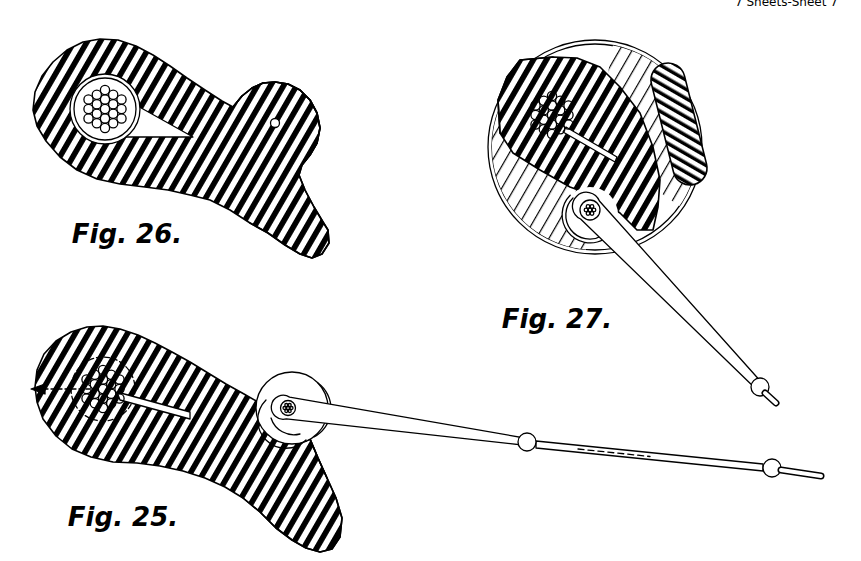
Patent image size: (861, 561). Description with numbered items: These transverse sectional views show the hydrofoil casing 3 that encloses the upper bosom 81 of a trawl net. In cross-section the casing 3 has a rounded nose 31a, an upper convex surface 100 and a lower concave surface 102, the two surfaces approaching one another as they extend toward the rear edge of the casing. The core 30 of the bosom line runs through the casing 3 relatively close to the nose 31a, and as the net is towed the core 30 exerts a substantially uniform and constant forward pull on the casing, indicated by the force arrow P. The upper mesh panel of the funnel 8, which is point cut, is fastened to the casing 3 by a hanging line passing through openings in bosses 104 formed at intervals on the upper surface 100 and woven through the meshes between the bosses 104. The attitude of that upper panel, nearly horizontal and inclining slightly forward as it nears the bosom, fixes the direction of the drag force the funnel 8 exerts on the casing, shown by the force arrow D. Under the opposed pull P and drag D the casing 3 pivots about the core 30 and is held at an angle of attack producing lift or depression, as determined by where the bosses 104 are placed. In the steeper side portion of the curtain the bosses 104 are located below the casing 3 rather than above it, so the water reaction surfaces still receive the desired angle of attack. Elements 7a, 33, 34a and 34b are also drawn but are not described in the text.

In FIG. 26, the casing 3 is at (176, 72).
In FIG. 25, the casing 3 is at (200, 371).
In FIG. 27, the casing 3 is at (548, 68).
In FIG. 26, the rounded nose 31a is at (45, 69).
In FIG. 25, the rounded nose 31a is at (50, 356).
In FIG. 27, the rounded nose 31a is at (507, 76).
In FIG. 26, the core 30 is at (78, 134).
In FIG. 25, the core 30 is at (64, 432).
In FIG. 27, the core 30 is at (526, 115).
In FIG. 26, the upper bosom 81 is at (158, 46).
In FIG. 25, the upper bosom 81 is at (192, 344).
In FIG. 26, the upper convex surface 100 is at (213, 91).
In FIG. 25, the upper convex surface 100 is at (234, 382).
In FIG. 26, the lower concave surface 102 is at (241, 222).
In FIG. 25, the lower concave surface 102 is at (258, 508).
In FIG. 26, the bosses 104 is at (307, 100).
In FIG. 25, the bosses 104 is at (306, 380).
In FIG. 27, the bosses 104 is at (572, 222).
In FIG. 25, the funnel 8 is at (445, 424).
In FIG. 27, the rod 7a is at (694, 306).
In FIG. 27, the strap 33 is at (699, 118).
In FIG. 27, the upper pad 34a is at (633, 70).
In FIG. 27, the lower pad 34b is at (521, 197).
In FIG. 25, the force arrow P is at (54, 407).
In FIG. 25, the force arrow D is at (607, 457).